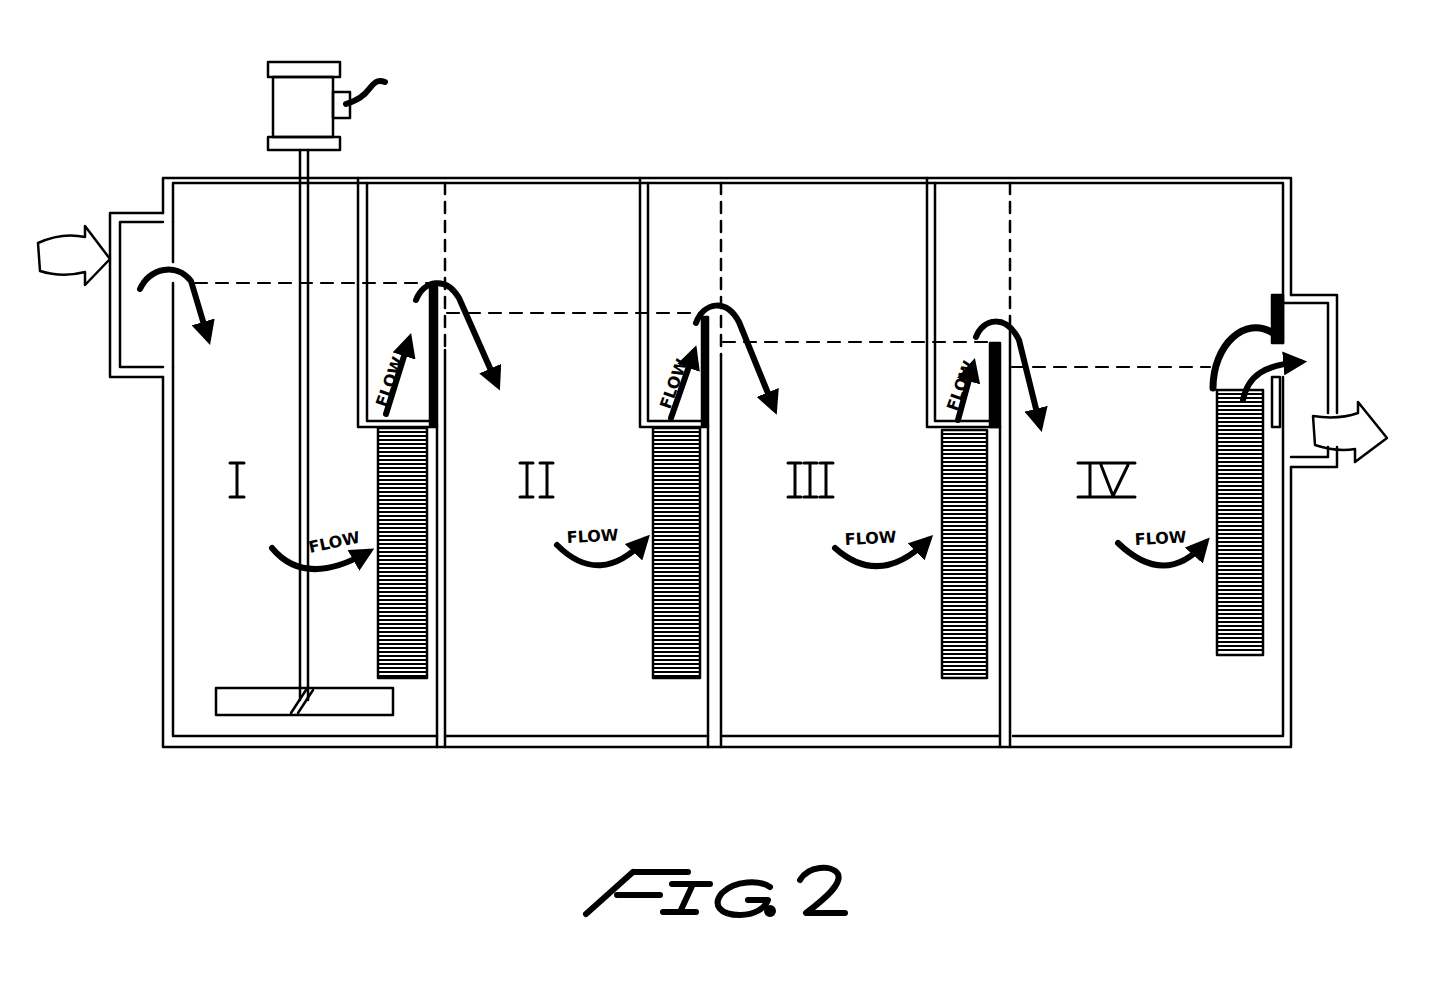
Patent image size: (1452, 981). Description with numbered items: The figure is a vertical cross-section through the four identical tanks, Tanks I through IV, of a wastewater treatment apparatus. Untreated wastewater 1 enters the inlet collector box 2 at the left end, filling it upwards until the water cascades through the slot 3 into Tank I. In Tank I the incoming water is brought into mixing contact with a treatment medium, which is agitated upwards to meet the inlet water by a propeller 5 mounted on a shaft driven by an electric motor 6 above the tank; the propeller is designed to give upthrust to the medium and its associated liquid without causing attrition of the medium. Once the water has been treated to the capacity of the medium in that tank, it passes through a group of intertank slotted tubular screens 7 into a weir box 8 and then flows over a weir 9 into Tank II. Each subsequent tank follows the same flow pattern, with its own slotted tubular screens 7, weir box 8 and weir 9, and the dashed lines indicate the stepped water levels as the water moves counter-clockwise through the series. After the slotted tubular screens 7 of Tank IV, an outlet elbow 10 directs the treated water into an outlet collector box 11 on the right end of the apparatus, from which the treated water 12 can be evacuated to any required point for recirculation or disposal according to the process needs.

The untreated wastewater 1 is at (42, 258).
The inlet collector box 2 is at (120, 345).
The slot 3 is at (192, 294).
The propeller 5 is at (260, 688).
The electric motor 6 is at (273, 90).
The slotted tubular screens 7 is at (1217, 648).
The weir box 8 is at (358, 217).
The weir 9 is at (492, 282).
The outlet elbow 10 is at (1262, 326).
The outlet collector box 11 is at (1337, 302).
The treated water 12 is at (1392, 444).